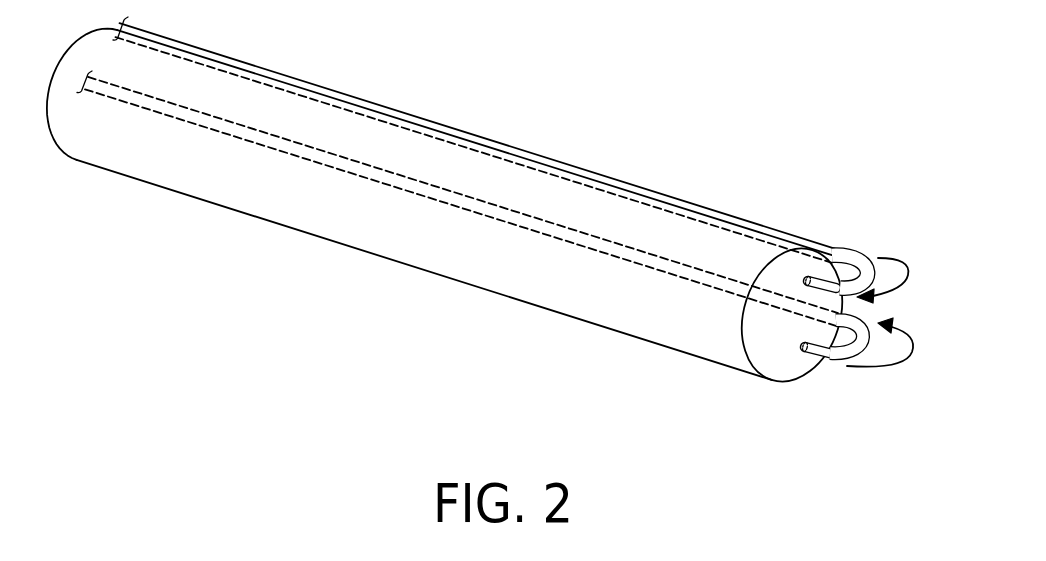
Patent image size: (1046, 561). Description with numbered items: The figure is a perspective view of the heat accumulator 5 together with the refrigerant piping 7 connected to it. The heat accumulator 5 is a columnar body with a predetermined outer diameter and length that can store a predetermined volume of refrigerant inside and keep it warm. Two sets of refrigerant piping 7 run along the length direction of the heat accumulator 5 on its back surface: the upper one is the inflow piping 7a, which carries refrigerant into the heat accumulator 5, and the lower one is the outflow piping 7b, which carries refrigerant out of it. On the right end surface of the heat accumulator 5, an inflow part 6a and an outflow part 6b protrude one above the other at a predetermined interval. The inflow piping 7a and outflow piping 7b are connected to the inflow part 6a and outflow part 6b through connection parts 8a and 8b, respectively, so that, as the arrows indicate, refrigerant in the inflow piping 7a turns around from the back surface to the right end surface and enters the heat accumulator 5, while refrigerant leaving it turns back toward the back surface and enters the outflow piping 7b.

The heat accumulator 5 is at (357, 249).
The refrigerant piping 7 is at (461, 187).
The inflow piping 7a is at (489, 139).
The outflow piping 7b is at (547, 239).
The inflow part 6a is at (822, 276).
The outflow part 6b is at (806, 352).
The connection part 8a is at (845, 266).
The connection part 8b is at (842, 358).